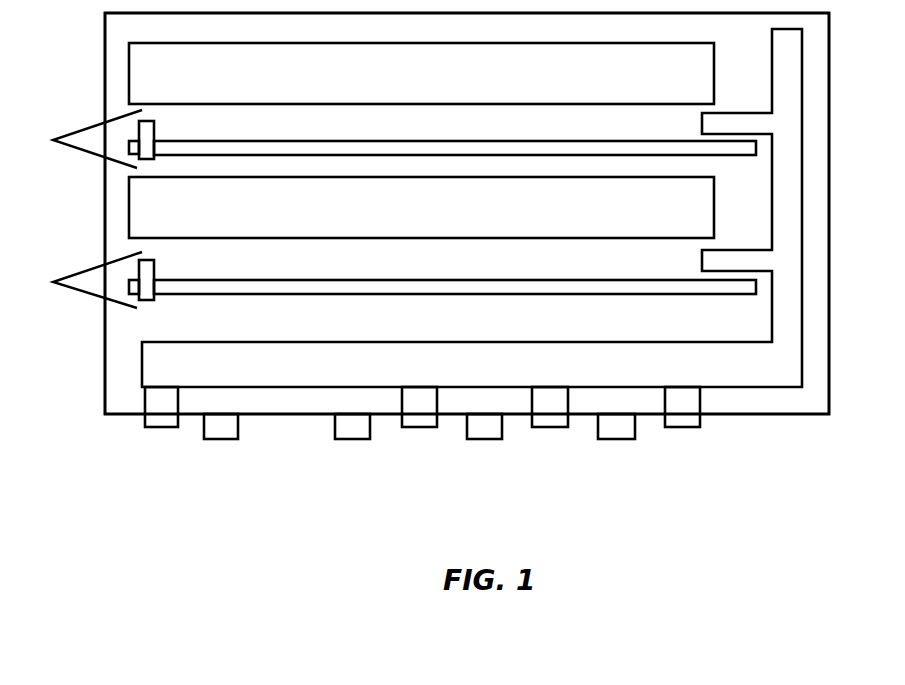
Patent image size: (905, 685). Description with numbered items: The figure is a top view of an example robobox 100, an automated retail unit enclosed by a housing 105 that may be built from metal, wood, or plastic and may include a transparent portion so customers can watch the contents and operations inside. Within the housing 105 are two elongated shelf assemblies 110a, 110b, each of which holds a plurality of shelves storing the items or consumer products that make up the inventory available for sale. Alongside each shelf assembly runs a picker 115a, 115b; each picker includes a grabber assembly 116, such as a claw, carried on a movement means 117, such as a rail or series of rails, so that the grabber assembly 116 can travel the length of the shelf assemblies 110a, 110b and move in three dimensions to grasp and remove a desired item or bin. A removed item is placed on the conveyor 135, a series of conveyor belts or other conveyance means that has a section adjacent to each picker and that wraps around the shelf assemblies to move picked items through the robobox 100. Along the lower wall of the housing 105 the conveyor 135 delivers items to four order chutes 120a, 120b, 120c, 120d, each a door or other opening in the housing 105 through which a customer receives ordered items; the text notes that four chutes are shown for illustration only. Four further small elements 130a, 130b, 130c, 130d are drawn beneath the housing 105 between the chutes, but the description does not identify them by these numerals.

The robobox 100 is at (467, 332).
The housing 105 is at (773, 417).
The shelf assembly 110a is at (421, 73).
The shelf assembly 110b is at (421, 207).
The picker 115a is at (87, 133).
The picker 115b is at (87, 274).
The grabber assembly 116 is at (157, 127).
The movement means 117 is at (313, 138).
The order chute 120a is at (285, 427).
The order chute 120b is at (418, 427).
The order chute 120c is at (550, 427).
The order chute 120d is at (682, 427).
The first terminal 130a is at (222, 439).
The second terminal 130b is at (353, 439).
The third terminal 130c is at (485, 439).
The fourth terminal 130d is at (617, 439).
The conveyor 135 is at (472, 208).